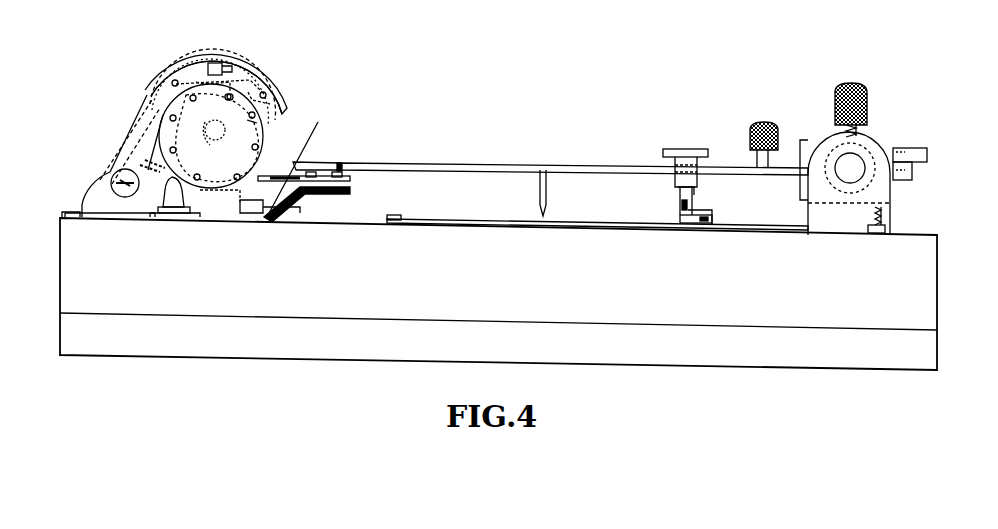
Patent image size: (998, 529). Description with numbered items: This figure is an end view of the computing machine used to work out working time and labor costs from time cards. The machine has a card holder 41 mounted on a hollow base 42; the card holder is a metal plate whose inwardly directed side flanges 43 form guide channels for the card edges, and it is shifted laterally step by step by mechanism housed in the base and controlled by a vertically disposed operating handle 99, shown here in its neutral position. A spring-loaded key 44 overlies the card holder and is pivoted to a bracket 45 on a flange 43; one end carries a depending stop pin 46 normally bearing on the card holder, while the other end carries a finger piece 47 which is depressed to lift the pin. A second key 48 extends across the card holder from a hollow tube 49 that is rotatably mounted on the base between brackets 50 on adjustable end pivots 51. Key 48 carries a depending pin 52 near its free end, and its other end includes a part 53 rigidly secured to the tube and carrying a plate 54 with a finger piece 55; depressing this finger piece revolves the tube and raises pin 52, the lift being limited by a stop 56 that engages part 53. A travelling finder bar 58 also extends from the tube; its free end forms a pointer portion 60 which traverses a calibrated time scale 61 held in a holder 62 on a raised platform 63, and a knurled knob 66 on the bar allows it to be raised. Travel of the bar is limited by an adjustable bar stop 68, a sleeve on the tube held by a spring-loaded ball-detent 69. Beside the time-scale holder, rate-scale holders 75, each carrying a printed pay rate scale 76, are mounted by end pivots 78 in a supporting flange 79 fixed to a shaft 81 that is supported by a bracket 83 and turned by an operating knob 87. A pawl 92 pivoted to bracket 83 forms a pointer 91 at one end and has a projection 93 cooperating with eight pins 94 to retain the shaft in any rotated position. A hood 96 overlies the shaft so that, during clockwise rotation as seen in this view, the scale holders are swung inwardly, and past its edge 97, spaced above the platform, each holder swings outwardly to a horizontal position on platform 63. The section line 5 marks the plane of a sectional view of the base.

The card holder 41 is at (600, 212).
The hollow base 42 is at (946, 246).
The side flanges 43 is at (400, 216).
The spring-loaded key 44 is at (676, 185).
The bracket 45 is at (700, 215).
The depending pin 46 is at (680, 218).
The finger piece 47 is at (672, 150).
The second key 48 is at (614, 167).
The tube 49 is at (870, 183).
The brackets 50 is at (806, 213).
The end pivots 51 is at (858, 165).
The depending pin 52 is at (540, 196).
The part 53 is at (806, 138).
The plate 54 is at (900, 150).
The finger piece 55 is at (928, 154).
The stop 56 is at (884, 216).
The travelling finder bar 58 is at (487, 164).
The pointer portion 60 is at (320, 162).
The time scale 61 is at (342, 165).
The holder 62 is at (350, 179).
The raised platform 63 is at (310, 193).
The knurled knob 66 is at (755, 126).
The adjustable bar stop 68 is at (862, 86).
The spring-loaded ball-detent 69 is at (856, 130).
The rate-scale holders 75 is at (230, 96).
The pay rate scale 76 is at (306, 150).
The end pivots 78 is at (266, 95).
The supporting flange 79 is at (278, 125).
The shaft 81 is at (210, 140).
The bracket 83 is at (100, 190).
The operating knob 87 is at (252, 128).
The pointer 91 is at (215, 64).
The pawl 92 is at (130, 143).
The projection 93 is at (238, 86).
The pins 94 is at (278, 87).
The hood 96 is at (197, 57).
The edge 97 is at (296, 105).
The operating handle 99 is at (152, 205).
The section line 5 is at (98, 293).